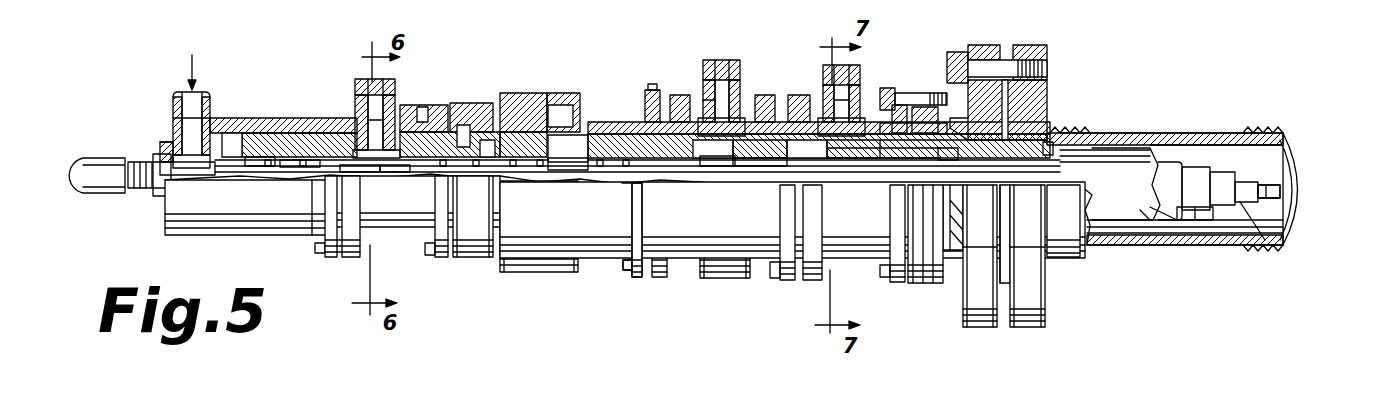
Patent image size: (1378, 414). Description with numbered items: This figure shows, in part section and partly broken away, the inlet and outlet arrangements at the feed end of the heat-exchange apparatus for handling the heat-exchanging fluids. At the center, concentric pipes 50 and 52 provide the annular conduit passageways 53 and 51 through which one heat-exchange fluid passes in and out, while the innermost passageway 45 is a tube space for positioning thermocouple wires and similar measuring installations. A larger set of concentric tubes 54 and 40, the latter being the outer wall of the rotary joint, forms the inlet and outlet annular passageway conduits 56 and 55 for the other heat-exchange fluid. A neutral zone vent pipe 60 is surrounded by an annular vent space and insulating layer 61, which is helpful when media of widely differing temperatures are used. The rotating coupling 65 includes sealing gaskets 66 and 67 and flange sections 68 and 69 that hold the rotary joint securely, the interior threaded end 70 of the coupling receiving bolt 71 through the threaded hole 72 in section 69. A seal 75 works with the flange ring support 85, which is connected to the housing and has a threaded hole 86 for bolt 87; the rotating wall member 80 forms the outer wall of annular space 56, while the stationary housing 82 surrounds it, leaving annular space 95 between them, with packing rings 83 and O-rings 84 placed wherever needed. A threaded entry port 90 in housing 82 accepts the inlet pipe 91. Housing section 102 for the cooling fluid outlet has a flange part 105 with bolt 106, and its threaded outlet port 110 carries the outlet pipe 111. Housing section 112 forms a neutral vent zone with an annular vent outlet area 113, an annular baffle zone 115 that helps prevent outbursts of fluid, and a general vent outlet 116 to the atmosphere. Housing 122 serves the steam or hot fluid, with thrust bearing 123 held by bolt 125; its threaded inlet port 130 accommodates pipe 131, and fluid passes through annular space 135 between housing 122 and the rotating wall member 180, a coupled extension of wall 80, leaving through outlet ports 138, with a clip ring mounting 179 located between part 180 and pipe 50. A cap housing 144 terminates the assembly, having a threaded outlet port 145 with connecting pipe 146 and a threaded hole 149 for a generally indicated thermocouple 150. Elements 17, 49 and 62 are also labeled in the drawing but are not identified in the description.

The tubular shaft 17 is at (1147, 143).
The outer wall of the rotary joint 40 is at (1290, 138).
The passageway 45 is at (1280, 188).
The nut 49 is at (158, 188).
The concentric pipe 50 is at (262, 168).
The annular conduit passageway 51 is at (238, 170).
The concentric pipe 52 is at (1235, 150).
The annular conduit passageway 53 is at (1243, 204).
The concentric pipe 54 is at (1172, 162).
The annular passageway conduit 55 is at (1150, 220).
The annular passageway conduit 56 is at (1137, 160).
The neutral zone vent pipe 60 is at (1200, 167).
The annular vent space 61 is at (1195, 222).
The spacer 62 is at (1180, 222).
The rotating coupling 65 is at (948, 343).
The sealing gasket 66 is at (1005, 120).
The sealing gasket 67 is at (1020, 80).
The flange section 68 is at (978, 330).
The flange section 69 is at (1030, 330).
The interior threaded end of a coupling 70 is at (1062, 133).
The bolt 71 is at (955, 55).
The threaded hole 72 is at (1030, 45).
The seal 75 is at (948, 160).
The rotating wall member 80 is at (1000, 135).
The stationary housing 82 is at (860, 258).
The packing rings 83 is at (290, 133).
The O-rings 84 is at (232, 133).
The flange ring support 85 is at (930, 285).
The threaded hole 86 is at (925, 107).
The bolt 87 is at (890, 88).
The threaded entry port 90 is at (830, 72).
The inlet pipe 91 is at (858, 80).
The annular space 95 is at (840, 160).
The housing section 102 is at (675, 95).
The flange part of the housing 105 is at (652, 90).
The bolt 106 is at (632, 279).
The threaded outlet port 110 is at (738, 85).
The outlet pipe 111 is at (720, 60).
The housing section 112 is at (540, 93).
The annular vent outlet area 113 is at (585, 140).
The annular baffle zone 115 is at (570, 105).
The general vent outlet to the atmosphere 116 is at (578, 110).
The housing 122 is at (425, 105).
The thrust bearing 123 is at (478, 140).
The bolt 125 is at (470, 103).
The threaded inlet port 130 is at (358, 90).
The pipe 131 is at (388, 95).
The annular space 135 is at (415, 105).
The outlet ports 138 is at (305, 170).
The cap housing 144 is at (230, 110).
The threaded outlet port 145 is at (168, 140).
The connecting pipe 146 is at (185, 108).
The threaded hole 149 is at (150, 170).
The thermocouple 150 is at (78, 170).
The clip ring mounting 179 is at (315, 133).
The rotating wall member 180 is at (348, 133).